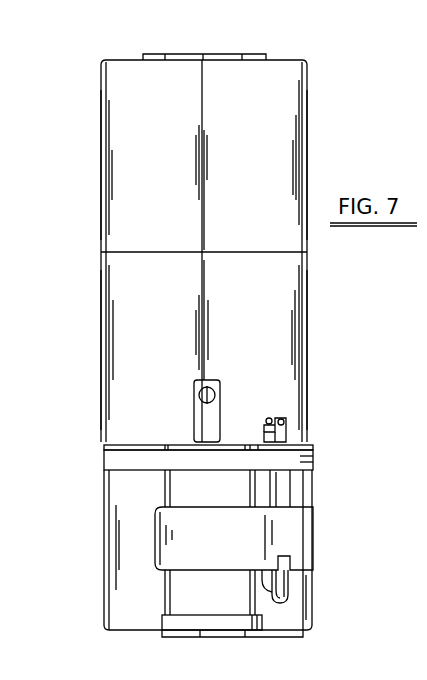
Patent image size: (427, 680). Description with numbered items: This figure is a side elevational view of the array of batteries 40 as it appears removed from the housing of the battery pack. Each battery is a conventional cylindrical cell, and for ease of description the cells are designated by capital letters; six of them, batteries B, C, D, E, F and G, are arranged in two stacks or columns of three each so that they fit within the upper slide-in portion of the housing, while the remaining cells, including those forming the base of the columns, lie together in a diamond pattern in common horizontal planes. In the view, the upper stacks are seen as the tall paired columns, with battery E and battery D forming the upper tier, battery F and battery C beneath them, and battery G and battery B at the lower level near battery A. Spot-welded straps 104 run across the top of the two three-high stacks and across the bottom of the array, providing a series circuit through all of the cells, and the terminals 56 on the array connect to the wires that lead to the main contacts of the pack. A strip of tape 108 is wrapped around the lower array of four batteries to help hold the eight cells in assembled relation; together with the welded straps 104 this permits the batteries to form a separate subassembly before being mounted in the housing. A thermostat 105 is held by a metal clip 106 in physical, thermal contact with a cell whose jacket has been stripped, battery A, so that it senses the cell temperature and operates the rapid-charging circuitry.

The array of batteries 40 is at (100, 302).
The terminals 56 is at (205, 413).
The strap 104 is at (176, 56).
The thermostat 105 is at (275, 496).
The clip 106 is at (172, 548).
The strip of tape 108 is at (312, 455).
The battery A is at (180, 597).
The battery B is at (280, 490).
The battery C is at (292, 355).
The battery D is at (286, 160).
The battery E is at (117, 152).
The battery F is at (120, 347).
The battery G is at (120, 534).